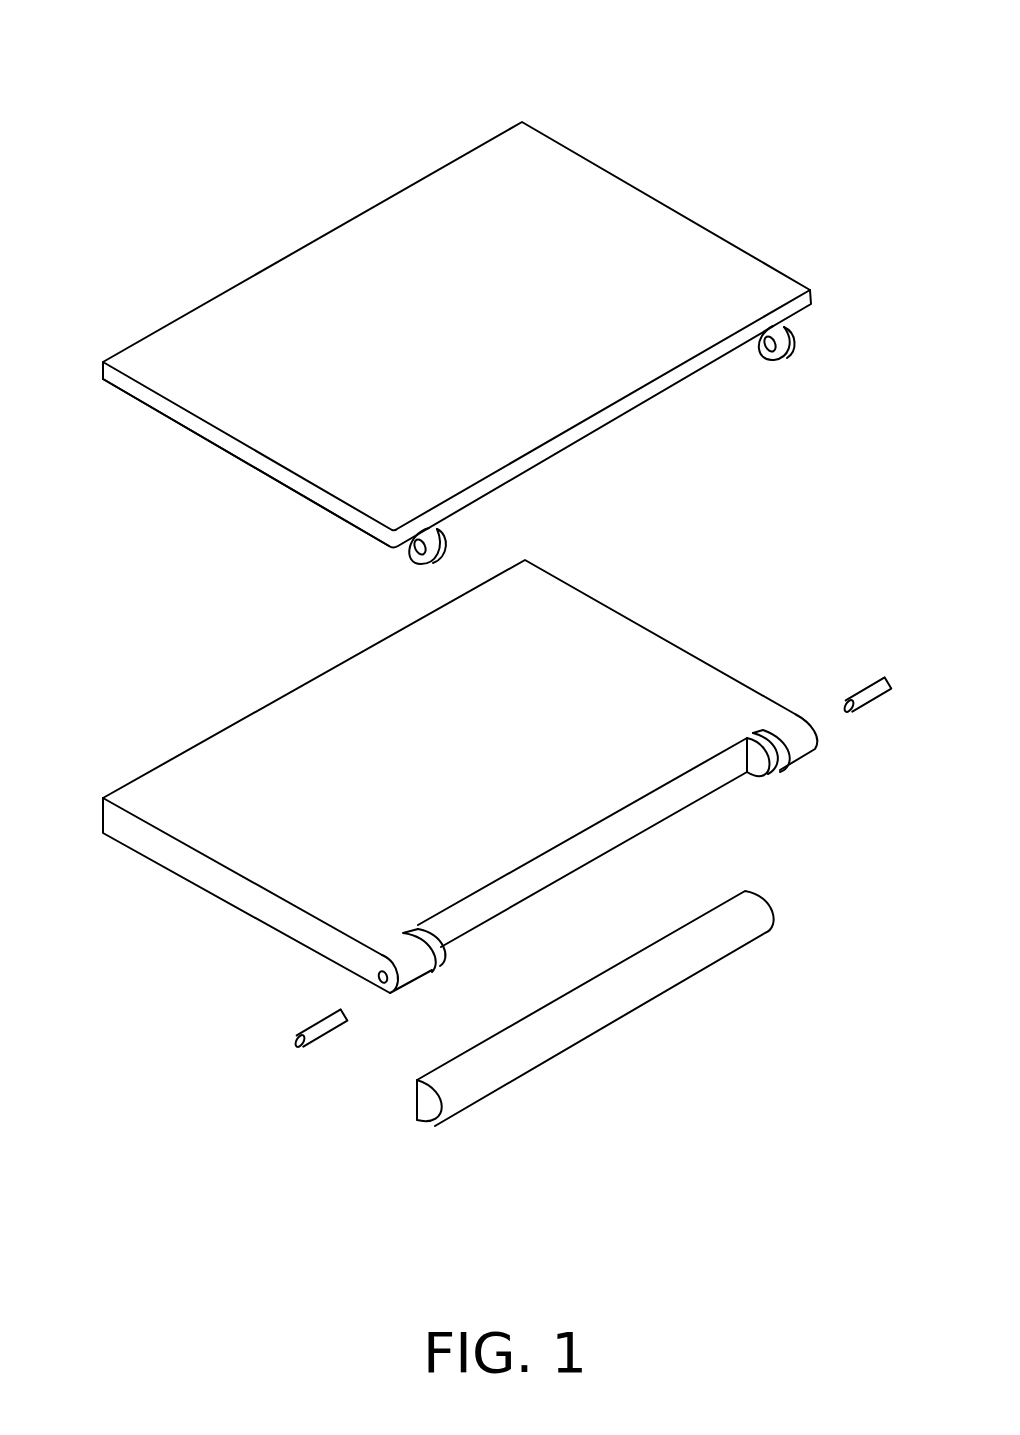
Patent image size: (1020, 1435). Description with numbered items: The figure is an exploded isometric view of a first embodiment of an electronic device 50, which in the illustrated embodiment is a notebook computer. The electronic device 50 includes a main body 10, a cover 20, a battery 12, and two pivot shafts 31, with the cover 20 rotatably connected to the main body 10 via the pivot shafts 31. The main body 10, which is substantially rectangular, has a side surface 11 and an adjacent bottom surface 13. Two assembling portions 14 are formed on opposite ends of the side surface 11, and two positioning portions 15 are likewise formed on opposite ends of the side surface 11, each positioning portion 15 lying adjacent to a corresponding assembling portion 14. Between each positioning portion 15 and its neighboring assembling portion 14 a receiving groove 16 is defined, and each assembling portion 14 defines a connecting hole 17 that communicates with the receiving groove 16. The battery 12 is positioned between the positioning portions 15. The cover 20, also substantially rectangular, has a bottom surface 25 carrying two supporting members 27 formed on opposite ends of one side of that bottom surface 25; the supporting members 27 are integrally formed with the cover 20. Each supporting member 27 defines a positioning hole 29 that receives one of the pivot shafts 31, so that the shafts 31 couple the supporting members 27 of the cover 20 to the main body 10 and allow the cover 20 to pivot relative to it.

The electronic device 50 is at (514, 45).
The cover 20 is at (640, 228).
The bottom surface 25 is at (188, 433).
The supporting member 27 is at (779, 358).
The positioning hole 29 is at (765, 360).
The main body 10 is at (240, 843).
The bottom surface 13 is at (141, 855).
The assembling portion 14 is at (405, 971).
The connecting hole 17 is at (383, 985).
The side surface 11 is at (717, 772).
The positioning portion 15 is at (441, 953).
The receiving groove 16 is at (440, 965).
The battery 12 is at (729, 935).
The pivot shaft 31 is at (312, 1033).